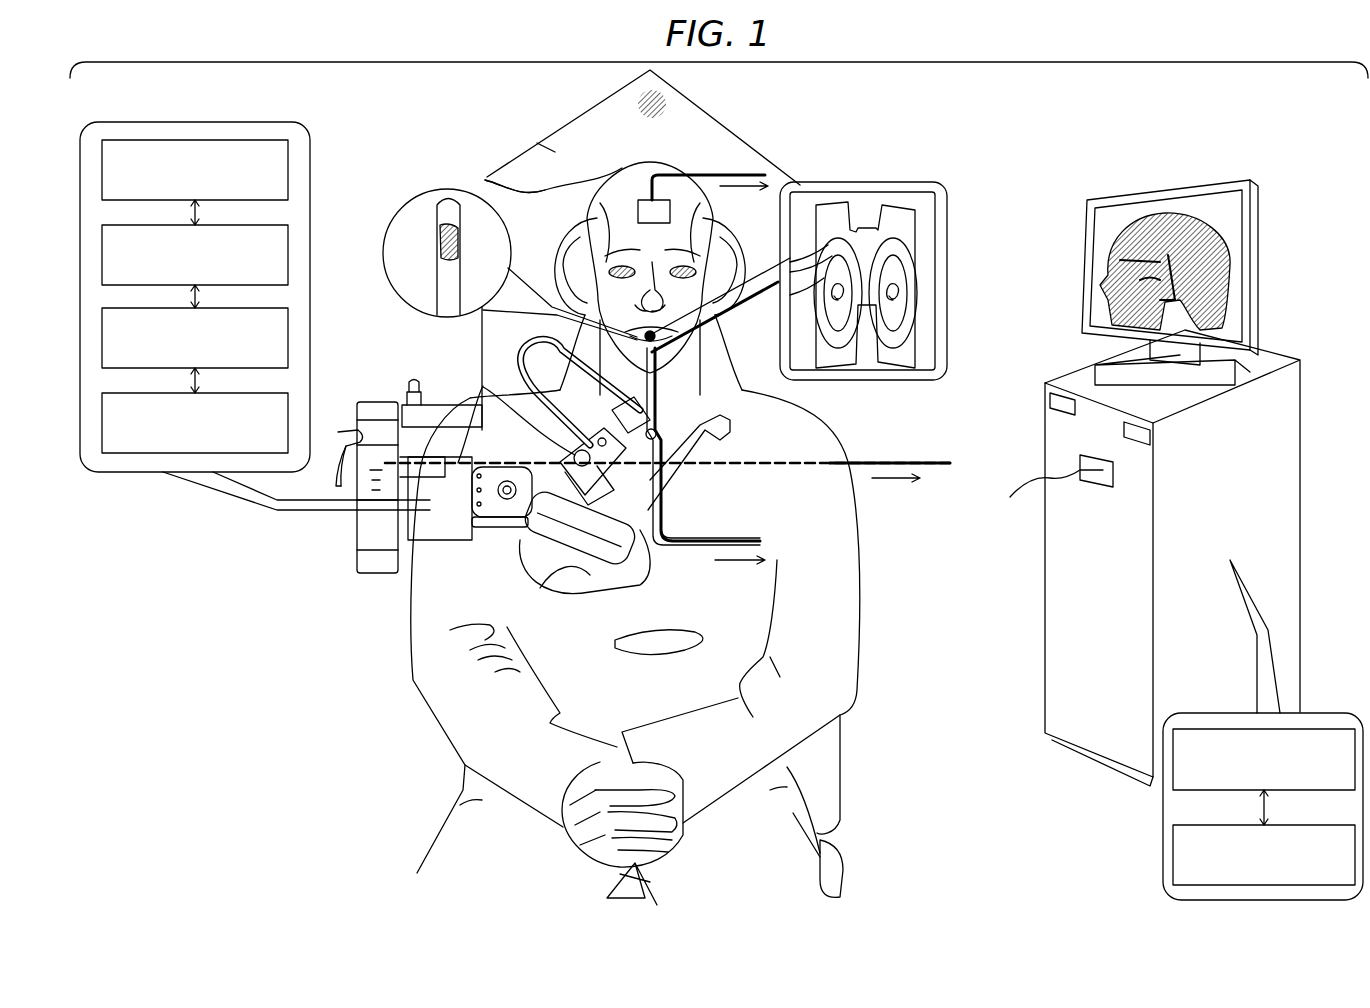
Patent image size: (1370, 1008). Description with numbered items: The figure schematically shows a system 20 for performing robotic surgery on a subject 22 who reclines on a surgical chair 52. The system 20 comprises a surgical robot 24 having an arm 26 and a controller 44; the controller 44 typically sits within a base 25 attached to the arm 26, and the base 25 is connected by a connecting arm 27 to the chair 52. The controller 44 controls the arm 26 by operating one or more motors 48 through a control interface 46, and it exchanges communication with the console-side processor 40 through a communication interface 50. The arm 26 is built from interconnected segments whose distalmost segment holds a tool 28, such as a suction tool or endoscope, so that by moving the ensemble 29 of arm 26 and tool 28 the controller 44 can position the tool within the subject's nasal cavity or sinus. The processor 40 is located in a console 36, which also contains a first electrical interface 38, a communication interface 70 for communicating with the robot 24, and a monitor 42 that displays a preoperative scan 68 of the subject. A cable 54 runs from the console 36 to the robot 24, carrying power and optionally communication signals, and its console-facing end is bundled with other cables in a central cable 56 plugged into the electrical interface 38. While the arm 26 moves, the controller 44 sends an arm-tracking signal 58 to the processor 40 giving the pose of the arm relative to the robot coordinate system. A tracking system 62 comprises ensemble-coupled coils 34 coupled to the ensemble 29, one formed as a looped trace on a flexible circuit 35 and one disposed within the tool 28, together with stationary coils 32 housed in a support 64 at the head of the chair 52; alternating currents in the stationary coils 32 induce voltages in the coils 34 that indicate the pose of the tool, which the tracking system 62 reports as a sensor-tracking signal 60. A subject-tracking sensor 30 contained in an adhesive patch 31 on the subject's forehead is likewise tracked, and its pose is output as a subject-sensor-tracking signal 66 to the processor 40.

The system 20 is at (1290, 181).
The subject 22 is at (488, 182).
The surgical robot 24 is at (415, 583).
The base 25 is at (398, 583).
The arm 26 is at (497, 396).
The connecting arm 27 is at (372, 398).
The tool 28 is at (678, 430).
The ensemble 29 is at (648, 591).
The subject-tracking sensor 30 is at (690, 182).
The adhesive patch 31 is at (695, 176).
The stationary coils 32 is at (640, 100).
The ensemble-coupled coils 34 is at (428, 235).
The flexible circuit 35 is at (905, 220).
The console 36 is at (1058, 660).
The first electrical interface 38 is at (1110, 480).
The processor 40 is at (1173, 850).
The monitor 42 is at (1083, 255).
The controller 44 is at (288, 252).
The control interface 46 is at (288, 335).
The motors 48 is at (288, 418).
The communication interface 50 is at (288, 168).
The surgical chair 52 is at (857, 750).
The cable 54 is at (950, 463).
The central cable 56 is at (1050, 495).
The arm-tracking signal 58 is at (890, 480).
The sensor-tracking signal 60 is at (775, 560).
The tracking system 62 is at (803, 123).
The support 64 is at (532, 138).
The subject-sensor-tracking signal 66 is at (742, 190).
The preoperative scan 68 is at (1128, 238).
The communication interface 70 is at (1180, 770).